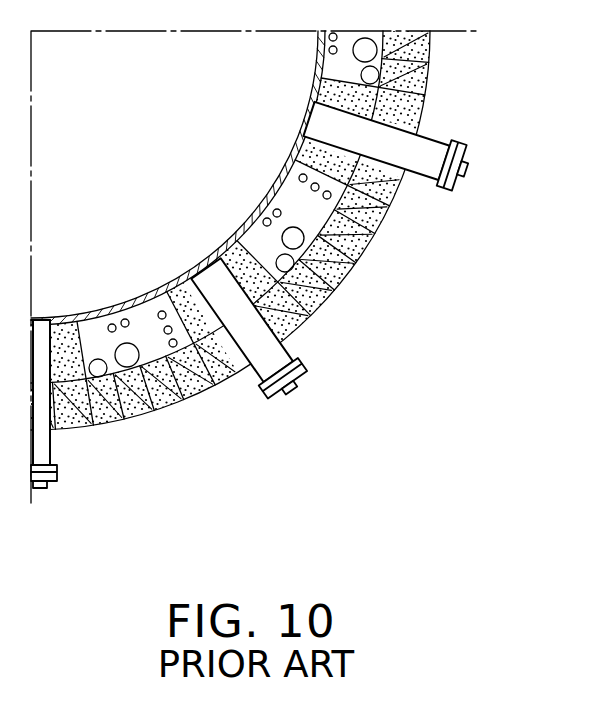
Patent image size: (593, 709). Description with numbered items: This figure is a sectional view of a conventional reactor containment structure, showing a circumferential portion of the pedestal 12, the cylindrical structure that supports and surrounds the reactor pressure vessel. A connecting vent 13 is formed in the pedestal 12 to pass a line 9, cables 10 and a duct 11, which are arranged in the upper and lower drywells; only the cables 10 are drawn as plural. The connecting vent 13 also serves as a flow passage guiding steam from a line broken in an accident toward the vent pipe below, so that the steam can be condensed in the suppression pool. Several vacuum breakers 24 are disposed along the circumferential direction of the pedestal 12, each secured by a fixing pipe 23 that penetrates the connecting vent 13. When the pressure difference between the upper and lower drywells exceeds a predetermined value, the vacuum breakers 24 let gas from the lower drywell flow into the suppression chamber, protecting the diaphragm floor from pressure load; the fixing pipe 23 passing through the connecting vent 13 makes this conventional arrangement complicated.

The line 9 is at (121, 405).
The cable 10 is at (142, 301).
The duct 11 is at (358, 262).
The pedestal 12 is at (388, 236).
The connecting vent 13 is at (288, 170).
The fixing pipe 23 is at (443, 133).
The vacuum breaker 24 is at (469, 168).